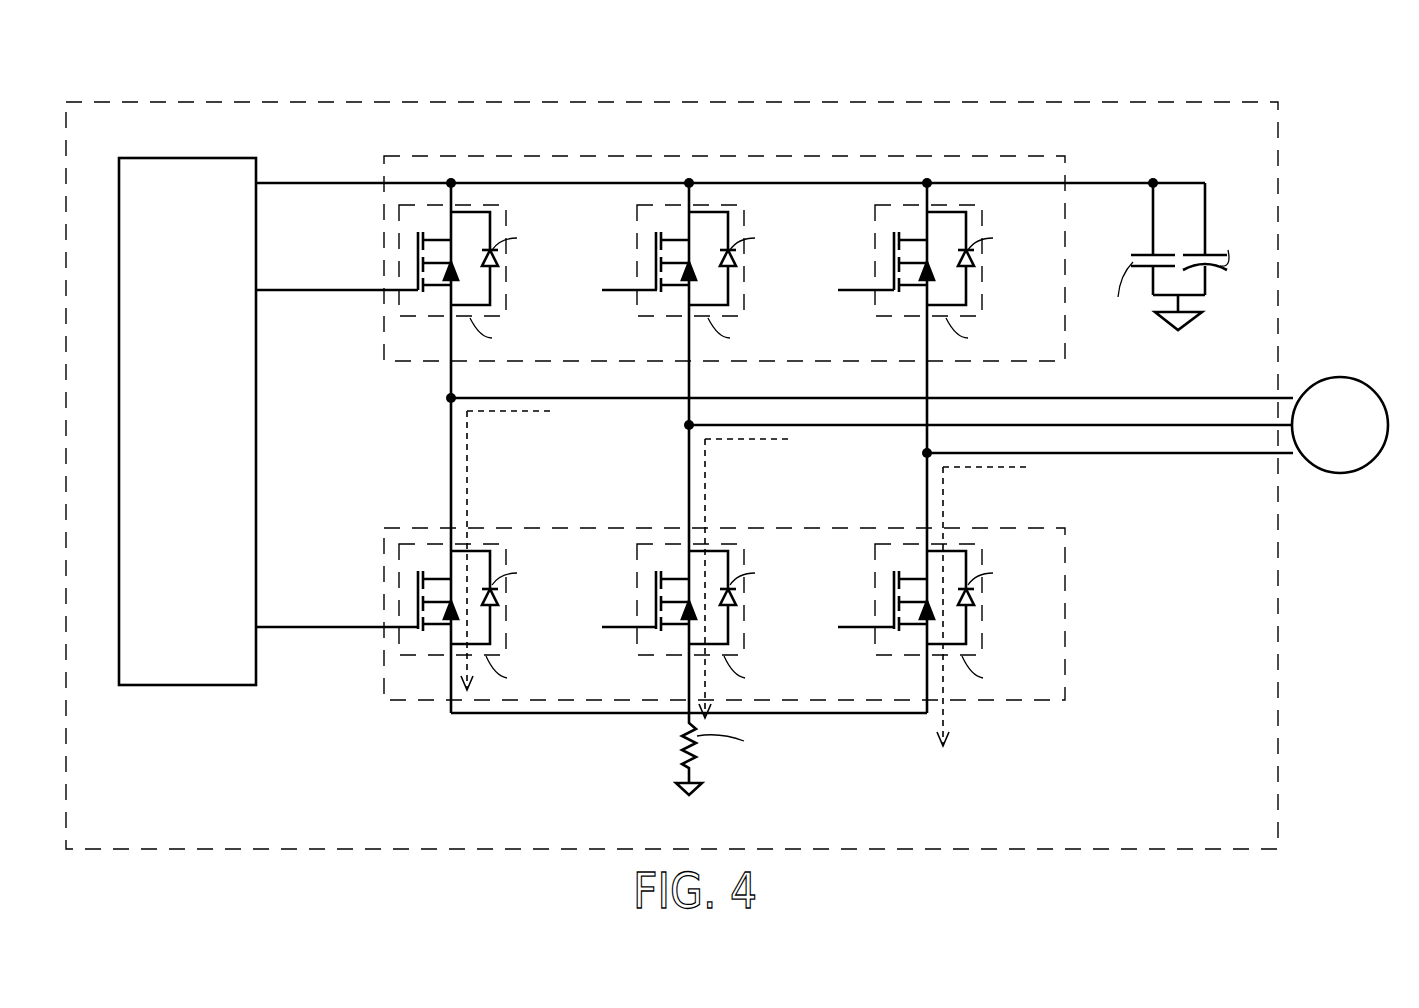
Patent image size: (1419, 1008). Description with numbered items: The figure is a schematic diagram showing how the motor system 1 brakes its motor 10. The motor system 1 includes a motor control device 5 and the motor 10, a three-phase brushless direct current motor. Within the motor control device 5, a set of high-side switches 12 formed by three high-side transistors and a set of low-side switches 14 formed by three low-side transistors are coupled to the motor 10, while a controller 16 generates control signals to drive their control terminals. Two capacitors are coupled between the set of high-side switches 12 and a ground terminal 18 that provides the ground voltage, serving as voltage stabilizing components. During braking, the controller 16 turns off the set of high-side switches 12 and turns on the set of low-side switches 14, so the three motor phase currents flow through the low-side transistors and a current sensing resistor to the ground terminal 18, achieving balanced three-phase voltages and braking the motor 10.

The motor system 1 is at (140, 72).
The motor control device 5 is at (1234, 101).
The motor 10 is at (1368, 386).
The set of high-side switches 12 is at (1072, 146).
The set of low-side switches 14 is at (1057, 528).
The controller 16 is at (227, 158).
The ground terminal 18 is at (1194, 322).